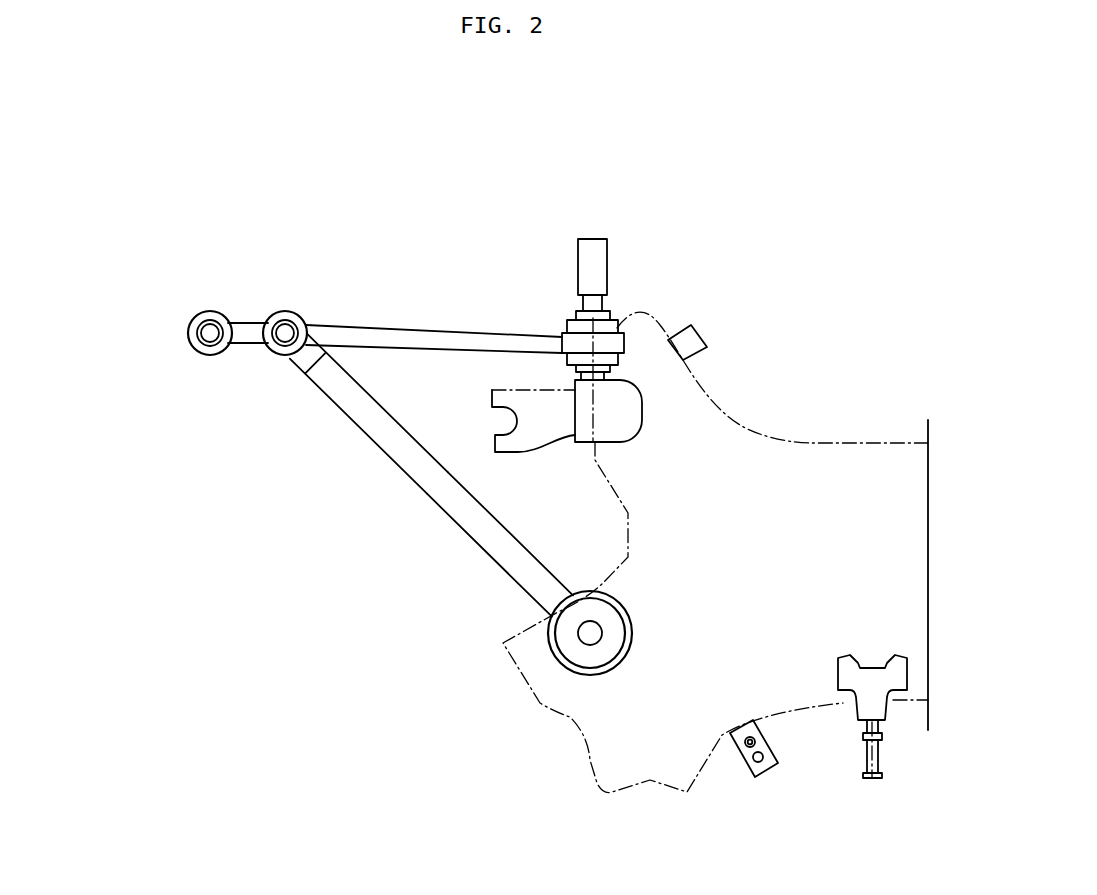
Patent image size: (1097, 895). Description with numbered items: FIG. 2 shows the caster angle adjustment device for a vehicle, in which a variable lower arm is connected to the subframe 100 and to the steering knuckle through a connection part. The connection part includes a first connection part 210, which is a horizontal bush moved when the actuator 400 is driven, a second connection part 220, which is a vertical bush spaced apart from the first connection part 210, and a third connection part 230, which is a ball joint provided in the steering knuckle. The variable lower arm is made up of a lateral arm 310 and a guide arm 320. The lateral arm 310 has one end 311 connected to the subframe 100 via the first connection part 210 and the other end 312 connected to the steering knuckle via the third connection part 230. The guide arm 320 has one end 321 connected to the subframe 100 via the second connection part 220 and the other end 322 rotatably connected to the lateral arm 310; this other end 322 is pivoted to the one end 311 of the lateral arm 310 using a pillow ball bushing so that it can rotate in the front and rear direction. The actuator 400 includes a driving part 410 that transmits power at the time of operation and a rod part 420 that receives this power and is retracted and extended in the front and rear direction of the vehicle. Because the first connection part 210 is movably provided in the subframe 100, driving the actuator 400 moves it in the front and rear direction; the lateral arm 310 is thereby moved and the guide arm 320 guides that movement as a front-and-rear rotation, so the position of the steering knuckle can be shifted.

The subframe 100 is at (839, 463).
The first connection part 210 is at (605, 312).
The second connection part 220 is at (573, 648).
The third connection part 230 is at (210, 311).
The lateral arm 310 is at (415, 337).
The one end of the lateral arm 311 is at (550, 343).
The other end of the lateral arm 312 is at (247, 325).
The guide arm 320 is at (374, 517).
The one end of the guide arm 321 is at (523, 575).
The other end of the guide arm 322 is at (325, 383).
The actuator 400 is at (678, 219).
The driving part 410 is at (600, 239).
The rod part 420 is at (603, 305).